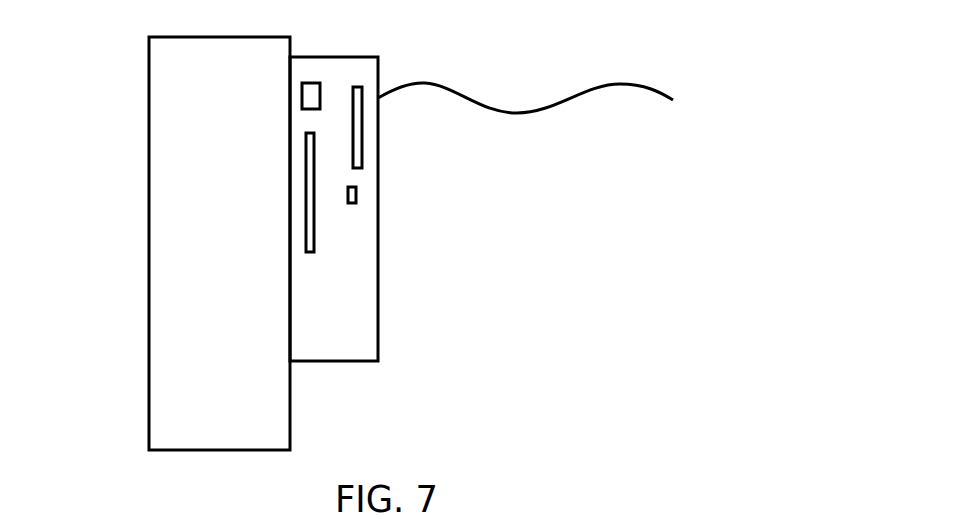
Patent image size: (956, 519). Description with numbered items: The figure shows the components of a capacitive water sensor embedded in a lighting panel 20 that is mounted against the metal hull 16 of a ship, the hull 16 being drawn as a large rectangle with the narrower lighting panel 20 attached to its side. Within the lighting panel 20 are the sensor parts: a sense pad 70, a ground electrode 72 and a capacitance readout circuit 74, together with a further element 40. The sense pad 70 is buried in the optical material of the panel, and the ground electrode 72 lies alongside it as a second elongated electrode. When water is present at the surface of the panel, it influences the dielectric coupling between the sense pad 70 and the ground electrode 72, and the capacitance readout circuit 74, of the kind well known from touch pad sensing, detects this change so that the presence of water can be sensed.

The hull 16 is at (160, 154).
The lighting panel 20 is at (378, 75).
The capacitance readout circuit 74 is at (310, 83).
The sense pad 70 is at (362, 131).
The sensor 40 is at (356, 195).
The ground electrode 72 is at (314, 234).